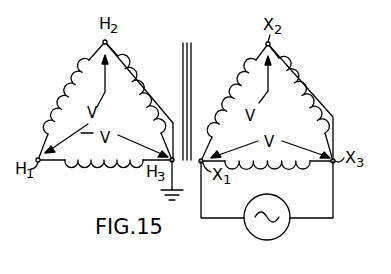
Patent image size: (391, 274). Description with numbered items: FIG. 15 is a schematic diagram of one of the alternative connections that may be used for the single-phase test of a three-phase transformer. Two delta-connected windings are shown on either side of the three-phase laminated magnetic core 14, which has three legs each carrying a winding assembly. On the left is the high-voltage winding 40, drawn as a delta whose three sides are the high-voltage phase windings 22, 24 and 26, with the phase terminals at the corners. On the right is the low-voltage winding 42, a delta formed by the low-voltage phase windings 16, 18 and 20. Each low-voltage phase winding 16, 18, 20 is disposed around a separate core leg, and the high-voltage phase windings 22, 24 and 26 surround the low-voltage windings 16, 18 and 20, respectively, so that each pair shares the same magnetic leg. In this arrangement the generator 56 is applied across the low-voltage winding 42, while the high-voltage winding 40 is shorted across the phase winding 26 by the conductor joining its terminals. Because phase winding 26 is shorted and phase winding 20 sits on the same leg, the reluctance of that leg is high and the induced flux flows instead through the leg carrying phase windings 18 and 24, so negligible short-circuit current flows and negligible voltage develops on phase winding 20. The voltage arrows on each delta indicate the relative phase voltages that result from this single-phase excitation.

The three-phase laminated magnetic core 14 is at (192, 52).
The low-voltage winding 16 is at (288, 167).
The low-voltage winding 18 is at (240, 80).
The low-voltage winding 20 is at (306, 94).
The high-voltage winding 22 is at (123, 165).
The high-voltage winding 24 is at (77, 76).
The high-voltage winding 26 is at (141, 92).
The high-voltage winding 40 is at (130, 120).
The low-voltage winding 42 is at (292, 125).
The generator 56 is at (251, 231).